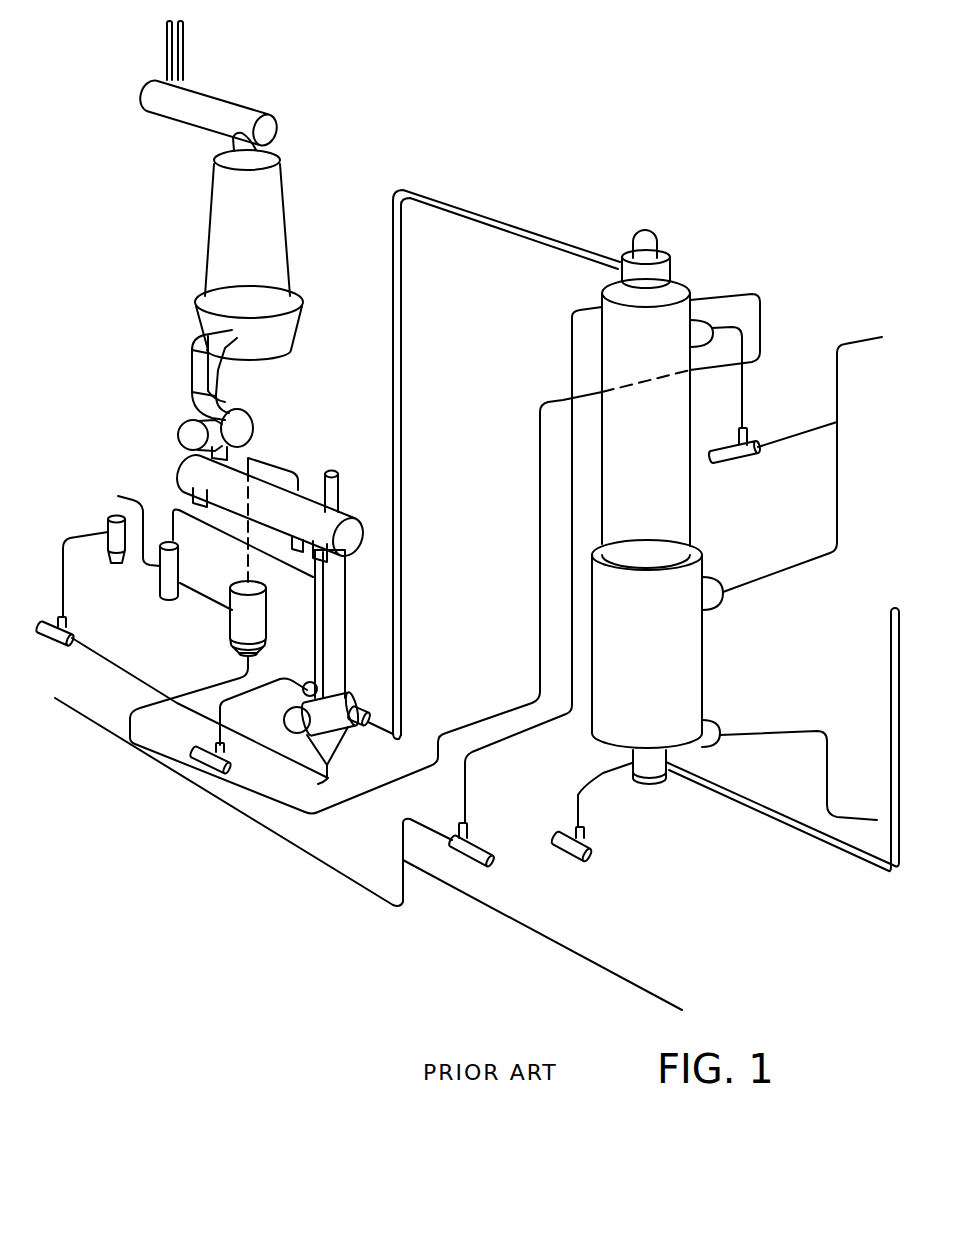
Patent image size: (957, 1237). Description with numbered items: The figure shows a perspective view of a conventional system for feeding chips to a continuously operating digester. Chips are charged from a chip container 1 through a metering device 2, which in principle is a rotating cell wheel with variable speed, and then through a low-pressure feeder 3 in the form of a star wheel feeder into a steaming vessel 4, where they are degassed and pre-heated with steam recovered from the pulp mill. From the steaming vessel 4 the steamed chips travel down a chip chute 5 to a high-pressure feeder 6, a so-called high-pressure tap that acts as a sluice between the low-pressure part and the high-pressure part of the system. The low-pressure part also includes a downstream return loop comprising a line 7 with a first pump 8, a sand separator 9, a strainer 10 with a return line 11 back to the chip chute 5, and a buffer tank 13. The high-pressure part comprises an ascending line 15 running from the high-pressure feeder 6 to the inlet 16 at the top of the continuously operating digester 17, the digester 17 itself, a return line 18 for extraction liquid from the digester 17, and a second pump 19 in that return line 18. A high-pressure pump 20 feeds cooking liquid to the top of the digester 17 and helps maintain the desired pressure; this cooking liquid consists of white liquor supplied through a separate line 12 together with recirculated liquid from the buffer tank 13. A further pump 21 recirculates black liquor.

The chip container 1 is at (277, 198).
The metering device 2 is at (222, 387).
The low-pressure feeder 3 is at (182, 423).
The steaming vessel 4 is at (182, 468).
The chip chute 5 is at (342, 615).
The high-pressure feeder 6 is at (357, 700).
The line 7 is at (100, 657).
The first pump 8 is at (60, 637).
The sand separator 9 is at (108, 523).
The strainer 10 is at (178, 582).
The return line 11 is at (224, 538).
The separate line 12 is at (93, 723).
The buffer tank 13 is at (258, 632).
The ascending line 15 is at (402, 365).
The inlet 16 is at (620, 258).
The continuously operating digester 17 is at (690, 512).
The return line 18 is at (540, 582).
The second pump 19 is at (208, 772).
The high-pressure pump 20 is at (475, 840).
The pump 21 is at (745, 458).